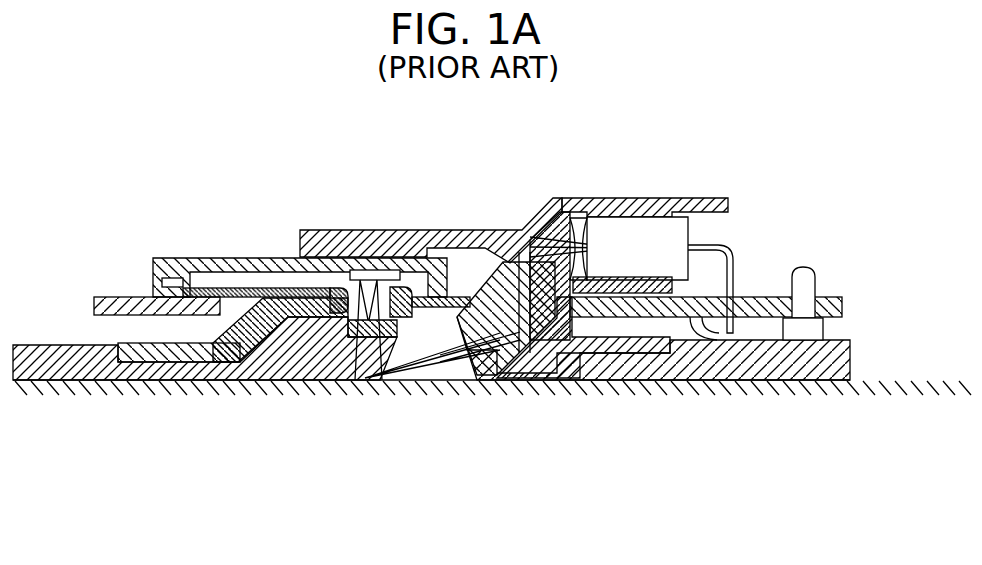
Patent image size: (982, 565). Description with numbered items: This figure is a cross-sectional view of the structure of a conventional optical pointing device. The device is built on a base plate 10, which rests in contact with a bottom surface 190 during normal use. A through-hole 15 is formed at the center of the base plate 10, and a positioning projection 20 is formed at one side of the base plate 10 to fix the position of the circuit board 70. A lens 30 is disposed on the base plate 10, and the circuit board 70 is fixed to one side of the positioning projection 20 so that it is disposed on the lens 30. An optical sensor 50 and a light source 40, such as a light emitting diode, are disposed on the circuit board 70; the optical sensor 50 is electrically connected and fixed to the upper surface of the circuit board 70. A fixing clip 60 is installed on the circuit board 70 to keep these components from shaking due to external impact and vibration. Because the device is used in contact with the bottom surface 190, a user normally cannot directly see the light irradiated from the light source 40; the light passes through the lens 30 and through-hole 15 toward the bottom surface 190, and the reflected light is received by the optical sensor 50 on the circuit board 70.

The base plate 10 is at (245, 385).
The through-hole 15 is at (328, 385).
The positioning projection 20 is at (803, 280).
The lens 30 is at (466, 305).
The light source 40 is at (660, 232).
The optical sensor 50 is at (228, 262).
The fixing clip 60 is at (607, 205).
The circuit board 70 is at (110, 307).
The bottom surface 190 is at (762, 406).